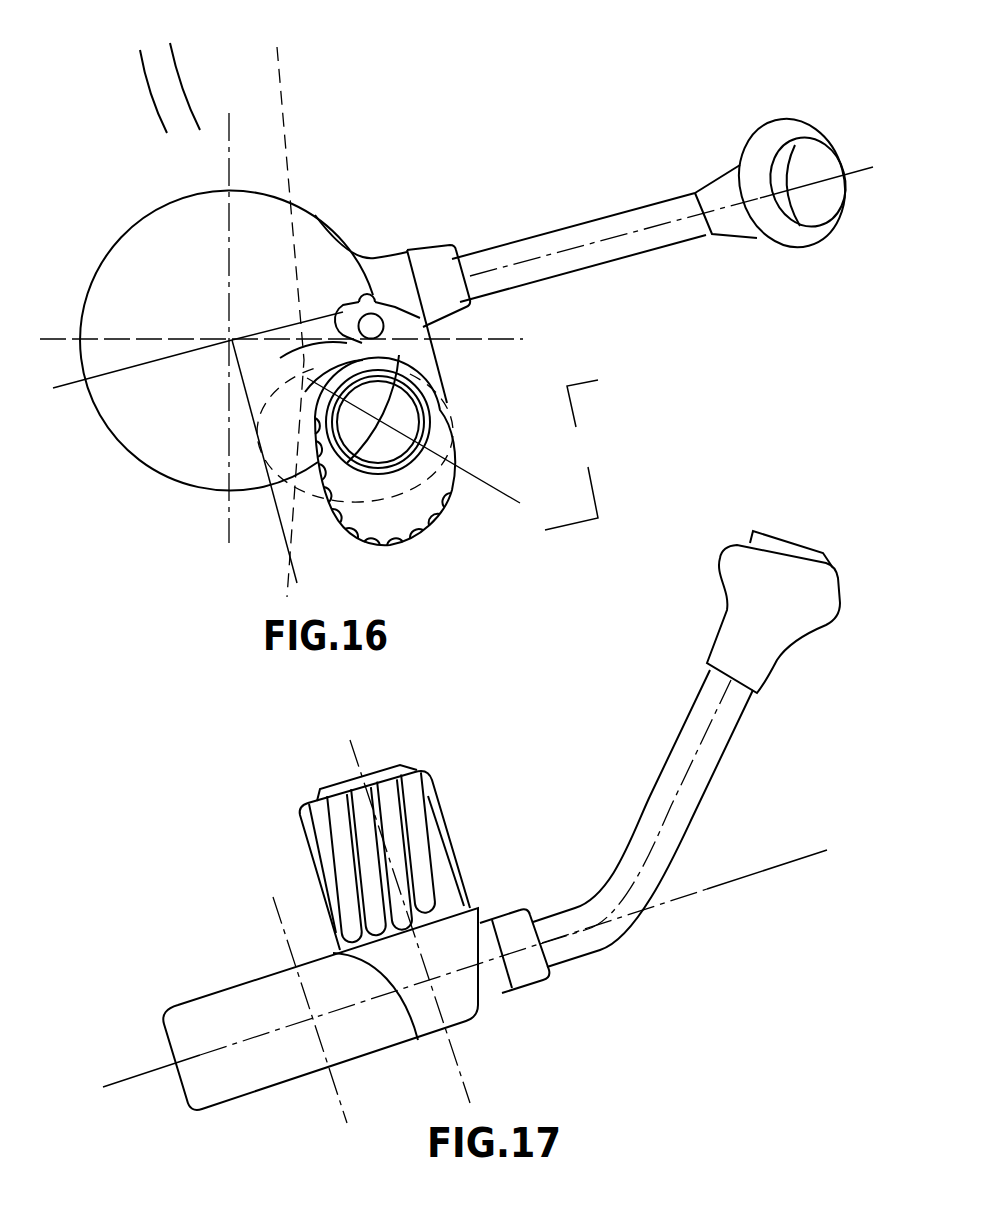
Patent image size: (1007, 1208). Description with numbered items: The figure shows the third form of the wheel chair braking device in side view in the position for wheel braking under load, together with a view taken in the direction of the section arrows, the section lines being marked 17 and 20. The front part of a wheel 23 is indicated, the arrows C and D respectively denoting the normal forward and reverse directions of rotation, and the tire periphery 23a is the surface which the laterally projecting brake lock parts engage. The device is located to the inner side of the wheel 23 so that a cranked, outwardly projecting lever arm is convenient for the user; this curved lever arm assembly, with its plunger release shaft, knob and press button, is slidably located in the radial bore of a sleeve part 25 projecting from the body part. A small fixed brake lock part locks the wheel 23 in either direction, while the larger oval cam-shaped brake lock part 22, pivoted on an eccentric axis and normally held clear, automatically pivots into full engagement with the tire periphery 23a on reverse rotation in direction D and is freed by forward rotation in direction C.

In FIG. 16, the wheel 23 is at (198, 328).
In FIG. 16, the tire periphery 23a is at (288, 91).
In FIG. 16, the forward direction of rotation C is at (160, 77).
In FIG. 16, the reverse direction of rotation D is at (182, 100).
In FIG. 16, the sleeve part 25 is at (447, 310).
In FIG. 16, the brake lock part 22 is at (67, 397).
In FIG. 16, the section line 17 is at (177, 633).
In FIG. 17, the section line 20 is at (803, 853).